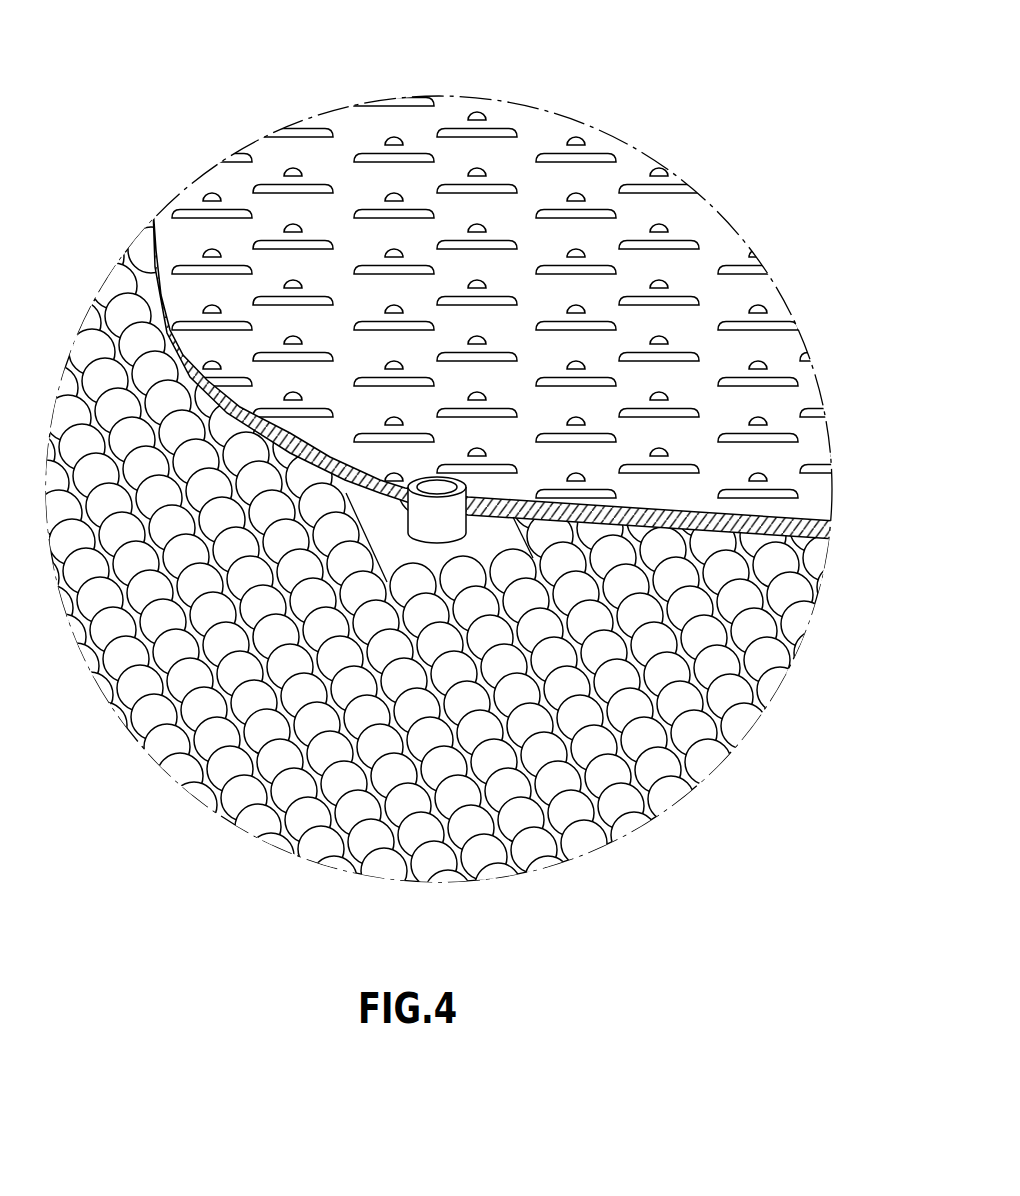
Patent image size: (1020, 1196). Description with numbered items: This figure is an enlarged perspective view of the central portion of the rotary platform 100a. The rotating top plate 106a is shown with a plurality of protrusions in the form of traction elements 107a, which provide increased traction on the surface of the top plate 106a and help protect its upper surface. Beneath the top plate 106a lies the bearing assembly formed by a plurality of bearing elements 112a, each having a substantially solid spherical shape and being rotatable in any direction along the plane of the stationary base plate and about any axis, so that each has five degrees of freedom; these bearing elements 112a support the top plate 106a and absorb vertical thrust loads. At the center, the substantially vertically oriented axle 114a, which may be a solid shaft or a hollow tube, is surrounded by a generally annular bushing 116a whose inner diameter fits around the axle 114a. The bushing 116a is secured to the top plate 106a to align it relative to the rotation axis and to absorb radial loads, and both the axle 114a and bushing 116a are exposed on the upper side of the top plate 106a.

The rotary platform 100a is at (678, 54).
The rotating top plate 106a is at (685, 213).
The traction elements 107a is at (673, 300).
The bearing elements 112a is at (593, 745).
The axle 114a is at (440, 488).
The bushing 116a is at (420, 517).